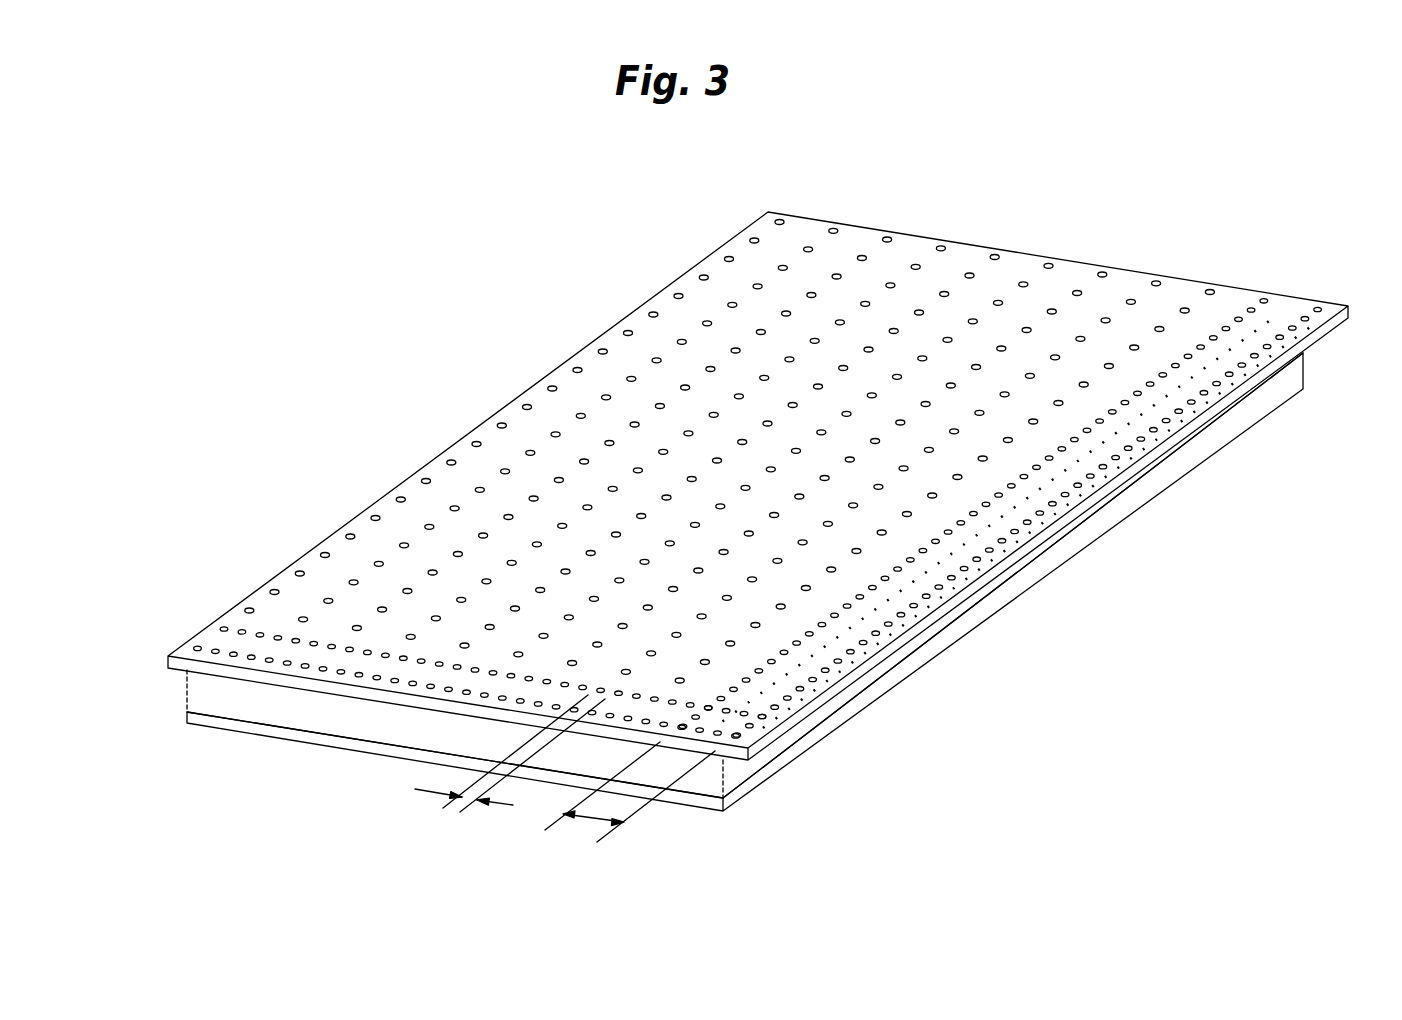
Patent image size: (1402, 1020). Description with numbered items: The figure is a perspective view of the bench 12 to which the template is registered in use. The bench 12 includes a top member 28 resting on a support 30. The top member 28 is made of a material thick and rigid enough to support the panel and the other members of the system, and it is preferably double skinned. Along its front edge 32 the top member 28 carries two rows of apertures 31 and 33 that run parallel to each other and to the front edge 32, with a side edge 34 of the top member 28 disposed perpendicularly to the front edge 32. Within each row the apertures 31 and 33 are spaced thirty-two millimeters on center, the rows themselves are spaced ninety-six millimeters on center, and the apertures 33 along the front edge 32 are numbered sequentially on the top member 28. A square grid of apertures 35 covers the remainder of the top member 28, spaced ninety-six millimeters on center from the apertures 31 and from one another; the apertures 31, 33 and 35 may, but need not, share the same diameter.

The bench 12 is at (421, 294).
The top member 28 is at (1328, 330).
The support 30 is at (1027, 574).
The apertures 31 is at (224, 628).
The front edge 32 is at (1168, 450).
The apertures 33 is at (197, 648).
The side edge 34 is at (438, 697).
The apertures 35 is at (628, 333).